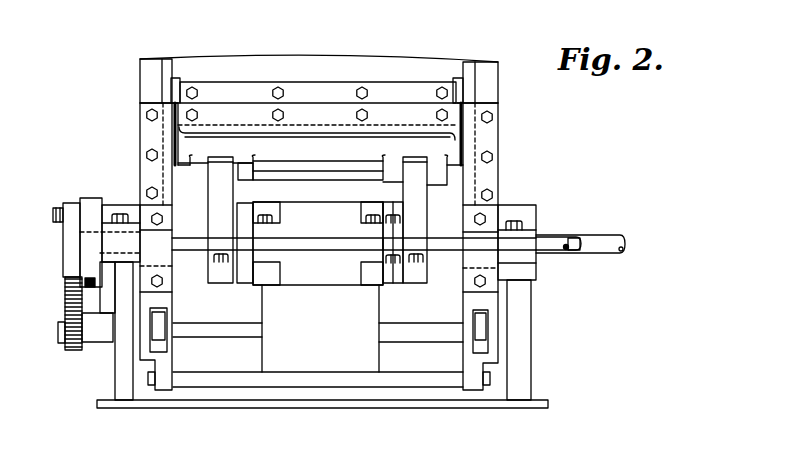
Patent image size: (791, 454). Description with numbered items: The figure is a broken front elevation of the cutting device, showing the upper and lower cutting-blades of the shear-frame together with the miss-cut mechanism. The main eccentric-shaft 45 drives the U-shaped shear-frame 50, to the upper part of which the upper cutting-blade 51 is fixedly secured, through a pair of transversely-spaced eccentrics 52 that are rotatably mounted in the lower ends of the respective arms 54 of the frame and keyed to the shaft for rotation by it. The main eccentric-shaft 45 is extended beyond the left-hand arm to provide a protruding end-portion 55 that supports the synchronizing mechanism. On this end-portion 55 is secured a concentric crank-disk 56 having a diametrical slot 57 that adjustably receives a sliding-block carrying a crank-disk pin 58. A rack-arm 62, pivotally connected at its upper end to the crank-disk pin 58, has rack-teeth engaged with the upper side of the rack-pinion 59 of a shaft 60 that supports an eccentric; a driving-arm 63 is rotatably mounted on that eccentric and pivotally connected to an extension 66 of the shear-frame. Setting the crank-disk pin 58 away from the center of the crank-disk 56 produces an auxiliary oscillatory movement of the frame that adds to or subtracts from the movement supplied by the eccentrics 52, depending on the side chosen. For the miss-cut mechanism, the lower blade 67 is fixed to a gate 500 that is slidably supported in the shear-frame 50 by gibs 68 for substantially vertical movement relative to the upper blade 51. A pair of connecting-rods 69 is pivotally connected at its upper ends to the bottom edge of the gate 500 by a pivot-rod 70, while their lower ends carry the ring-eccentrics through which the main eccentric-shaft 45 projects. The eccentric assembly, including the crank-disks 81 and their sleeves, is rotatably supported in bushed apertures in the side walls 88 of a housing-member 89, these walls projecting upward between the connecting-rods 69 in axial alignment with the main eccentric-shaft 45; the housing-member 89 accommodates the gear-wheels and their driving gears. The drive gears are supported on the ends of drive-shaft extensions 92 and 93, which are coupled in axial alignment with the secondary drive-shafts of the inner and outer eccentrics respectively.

The U-shaped shear-frame 50 is at (379, 54).
The upper cutting-blade 51 is at (326, 88).
The gibs 68 is at (163, 129).
The arms of the U-shaped shear-frame 54 is at (147, 160).
The lower blade 67 is at (323, 120).
The connecting-rods 69 is at (213, 207).
The pivot-rod 70 is at (278, 183).
The gate 500 is at (311, 158).
The side walls 88 is at (270, 193).
The housing-member 89 is at (314, 275).
The crank-disks 81 is at (246, 272).
The main eccentric-shaft 45 is at (186, 250).
The drive-shaft extension 93 is at (442, 245).
The drive-shaft extension 92 is at (575, 253).
The eccentrics 52 is at (164, 273).
The crank-disk 56 is at (91, 200).
The crank-disk pin 58 is at (53, 215).
The end-portion 55 is at (100, 253).
The diametrical slot 57 is at (65, 285).
The rack-arm 62 is at (67, 298).
The rack-pinion 59 is at (70, 348).
The driving-arm 63 is at (167, 313).
The shaft 60 is at (213, 341).
The extension of the shear-frame 66 is at (163, 390).